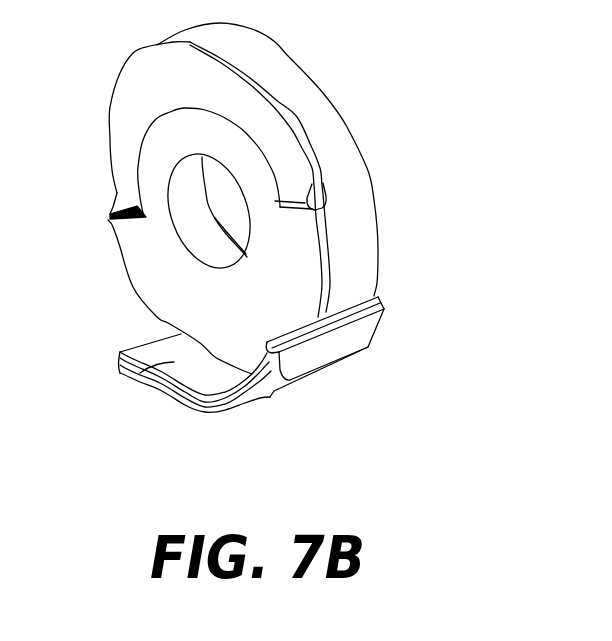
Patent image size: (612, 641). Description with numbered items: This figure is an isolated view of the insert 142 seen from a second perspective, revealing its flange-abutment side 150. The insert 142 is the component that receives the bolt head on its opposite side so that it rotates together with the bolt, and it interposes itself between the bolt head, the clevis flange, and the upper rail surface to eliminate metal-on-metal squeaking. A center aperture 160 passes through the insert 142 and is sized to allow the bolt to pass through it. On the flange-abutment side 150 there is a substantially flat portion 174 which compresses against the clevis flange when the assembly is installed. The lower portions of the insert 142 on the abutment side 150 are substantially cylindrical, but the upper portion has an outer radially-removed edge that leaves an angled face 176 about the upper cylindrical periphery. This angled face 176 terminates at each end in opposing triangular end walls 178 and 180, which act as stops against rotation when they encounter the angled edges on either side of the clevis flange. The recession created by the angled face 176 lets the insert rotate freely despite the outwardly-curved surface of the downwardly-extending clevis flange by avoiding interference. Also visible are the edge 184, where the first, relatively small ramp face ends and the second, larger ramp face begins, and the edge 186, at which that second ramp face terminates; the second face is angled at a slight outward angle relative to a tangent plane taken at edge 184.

The insert 142 is at (450, 247).
The flange-abutment side 150 is at (162, 259).
The center aperture 160 is at (230, 197).
The substantially flat portion 174 is at (248, 335).
The angled face 176 is at (152, 83).
The triangular end wall 178 is at (310, 185).
The triangular end wall 180 is at (115, 195).
The edge 184 is at (138, 374).
The edge 186 is at (207, 425).